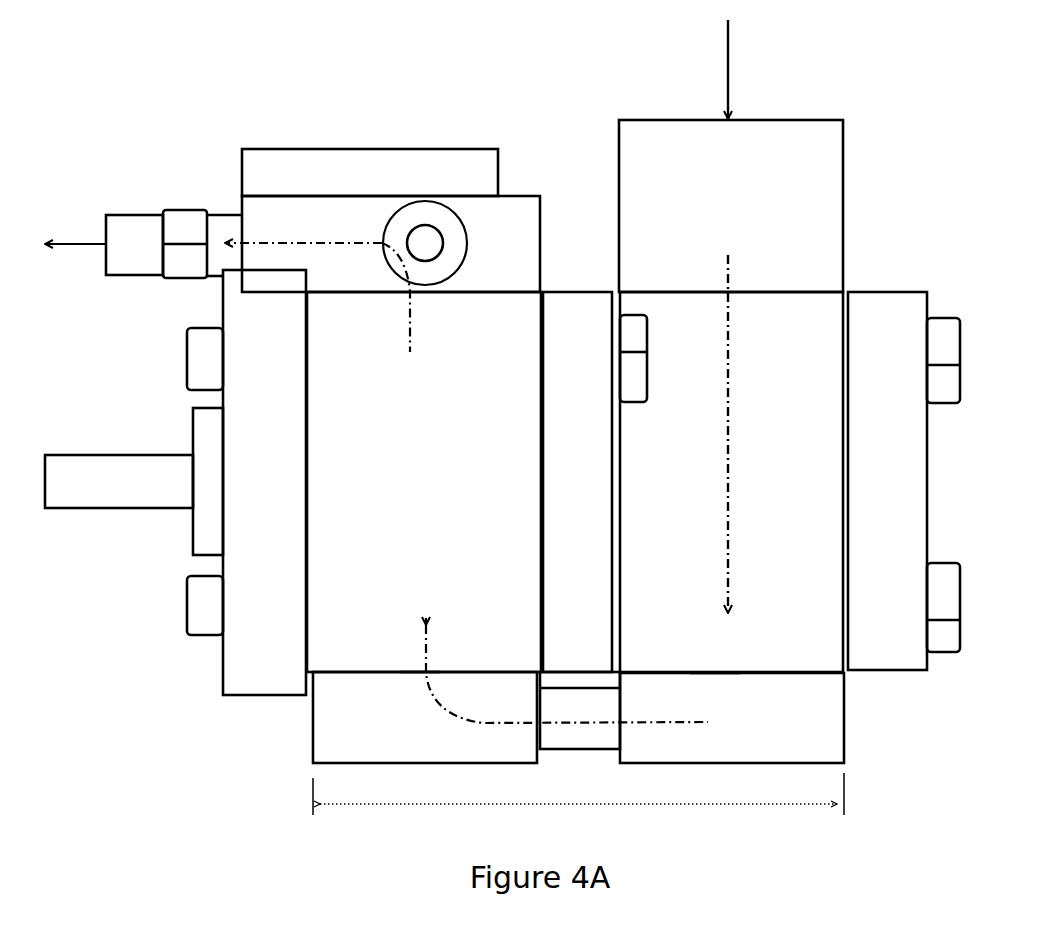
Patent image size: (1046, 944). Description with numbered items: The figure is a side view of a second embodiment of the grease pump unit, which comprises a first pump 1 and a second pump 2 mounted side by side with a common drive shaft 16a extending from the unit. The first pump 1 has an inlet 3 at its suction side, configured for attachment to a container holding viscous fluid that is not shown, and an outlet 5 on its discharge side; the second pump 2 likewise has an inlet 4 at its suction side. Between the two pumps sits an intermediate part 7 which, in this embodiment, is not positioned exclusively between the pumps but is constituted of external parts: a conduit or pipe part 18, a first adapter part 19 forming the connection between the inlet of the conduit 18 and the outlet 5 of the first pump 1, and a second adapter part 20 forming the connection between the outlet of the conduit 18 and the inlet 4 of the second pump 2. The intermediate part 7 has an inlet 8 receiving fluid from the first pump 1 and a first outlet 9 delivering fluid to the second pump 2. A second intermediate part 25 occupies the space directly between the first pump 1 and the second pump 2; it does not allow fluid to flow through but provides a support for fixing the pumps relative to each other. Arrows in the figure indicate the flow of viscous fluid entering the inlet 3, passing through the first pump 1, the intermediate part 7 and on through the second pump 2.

The first pump 1 is at (731, 482).
The second pump 2 is at (424, 482).
The inlet 3 is at (731, 156).
The inlet 4 is at (415, 672).
The outlet 5 is at (759, 444).
The intermediate part 7 is at (660, 804).
The inlet 8 is at (728, 675).
The first outlet 9 is at (420, 672).
The drive shaft 16a is at (134, 481).
The conduit 18 is at (577, 740).
The first adapter part 19 is at (732, 718).
The second adapter part 20 is at (425, 717).
The second intermediate part 25 is at (577, 482).